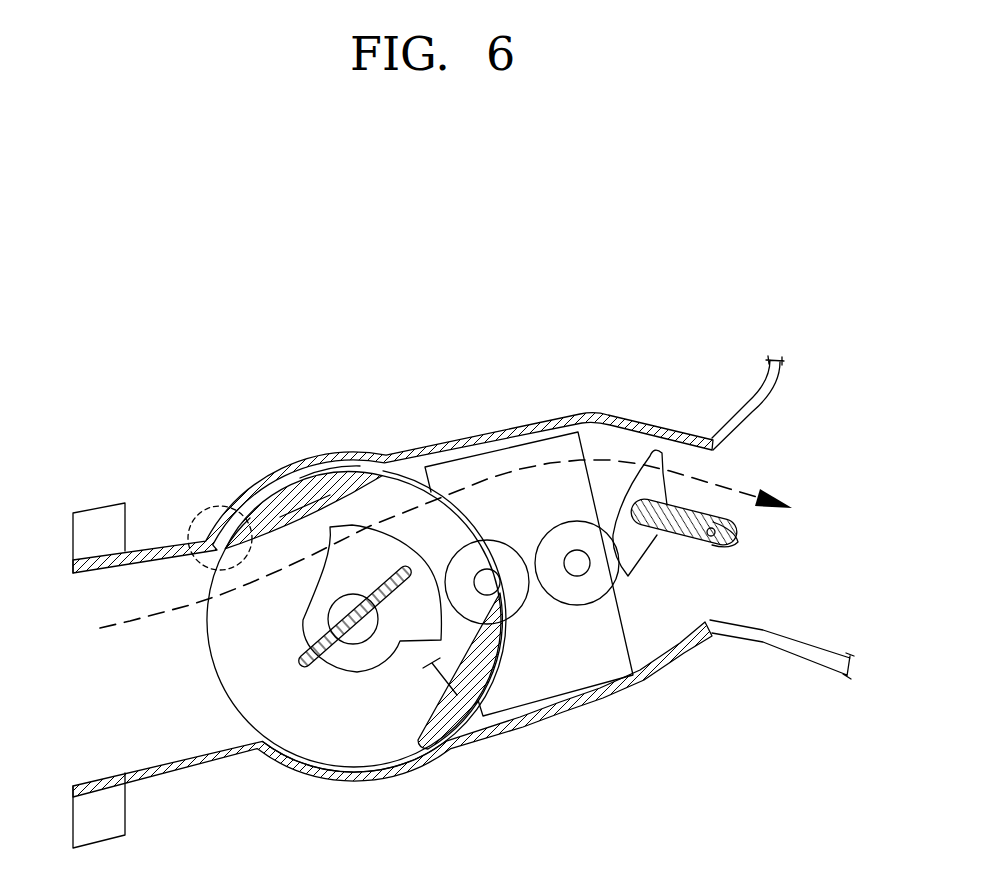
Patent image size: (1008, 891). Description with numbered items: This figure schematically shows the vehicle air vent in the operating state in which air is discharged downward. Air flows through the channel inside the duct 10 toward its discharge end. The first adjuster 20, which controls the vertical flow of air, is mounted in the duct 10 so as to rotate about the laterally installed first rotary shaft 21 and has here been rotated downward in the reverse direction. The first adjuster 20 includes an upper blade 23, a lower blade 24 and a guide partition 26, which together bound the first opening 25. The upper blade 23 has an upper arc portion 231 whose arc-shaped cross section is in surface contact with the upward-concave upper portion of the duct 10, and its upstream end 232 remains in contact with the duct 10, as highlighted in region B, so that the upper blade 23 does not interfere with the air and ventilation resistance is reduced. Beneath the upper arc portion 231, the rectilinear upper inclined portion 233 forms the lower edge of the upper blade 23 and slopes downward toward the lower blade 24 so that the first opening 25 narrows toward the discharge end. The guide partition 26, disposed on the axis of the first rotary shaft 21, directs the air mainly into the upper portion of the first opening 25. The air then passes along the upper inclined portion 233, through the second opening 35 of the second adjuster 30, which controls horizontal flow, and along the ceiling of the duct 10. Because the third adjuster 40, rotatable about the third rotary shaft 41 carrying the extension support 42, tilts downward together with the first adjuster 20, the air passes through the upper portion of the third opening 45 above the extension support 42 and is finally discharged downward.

The duct 10 is at (595, 400).
The first adjuster 20 is at (371, 458).
The first rotary shaft 21 is at (354, 645).
The upper blade 23 is at (272, 486).
The upper arc portion 231 is at (310, 480).
The upstream end 232 is at (238, 512).
The upper inclined portion 233 is at (337, 470).
The lower blade 24 is at (448, 730).
The first opening 25 is at (458, 722).
The guide partition 26 is at (300, 668).
The second adjuster 30 is at (602, 712).
The second opening 35 is at (571, 648).
The third adjuster 40 is at (704, 495).
The third rotary shaft 41 is at (713, 547).
The extension support 42 is at (652, 480).
The third opening 45 is at (690, 578).
The region B is at (195, 523).